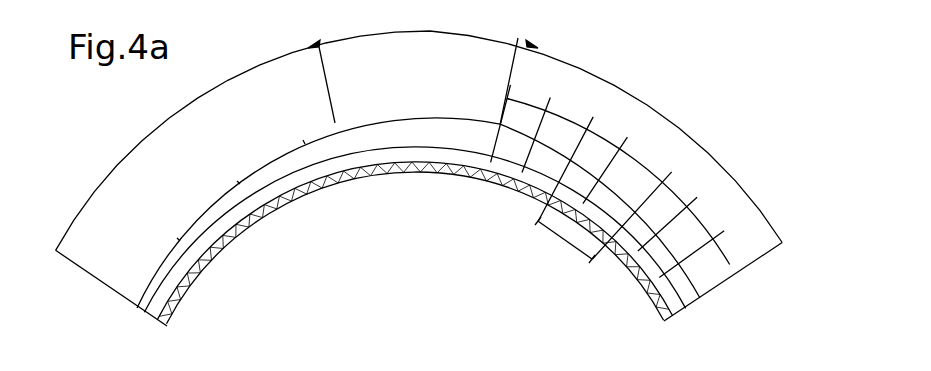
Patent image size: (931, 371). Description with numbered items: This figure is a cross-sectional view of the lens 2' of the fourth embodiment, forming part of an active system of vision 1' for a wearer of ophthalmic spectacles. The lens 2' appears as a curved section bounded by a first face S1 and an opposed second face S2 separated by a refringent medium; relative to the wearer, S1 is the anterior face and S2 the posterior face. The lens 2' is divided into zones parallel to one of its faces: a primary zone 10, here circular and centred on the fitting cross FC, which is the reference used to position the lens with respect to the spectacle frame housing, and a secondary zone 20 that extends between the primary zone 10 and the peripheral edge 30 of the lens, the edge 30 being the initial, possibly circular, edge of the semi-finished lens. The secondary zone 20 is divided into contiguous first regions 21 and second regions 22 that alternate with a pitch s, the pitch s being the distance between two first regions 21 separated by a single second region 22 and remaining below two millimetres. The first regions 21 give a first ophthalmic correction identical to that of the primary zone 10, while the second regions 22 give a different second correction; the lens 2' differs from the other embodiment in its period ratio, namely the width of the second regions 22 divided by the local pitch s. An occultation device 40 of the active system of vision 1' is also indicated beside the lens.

The primary zone 10 is at (423, 68).
The secondary zone 20 is at (419, 178).
The first regions 21 is at (635, 167).
The second regions 22 is at (608, 177).
The initial peripheral edge 30 is at (699, 299).
The occultation device 40 is at (231, 248).
The fitting cross FC is at (417, 117).
The first face S1 is at (451, 110).
The second face S2 is at (463, 160).
The alternating pitch s is at (565, 240).
The outer side 1' is at (748, 104).
The lens 2' is at (85, 304).